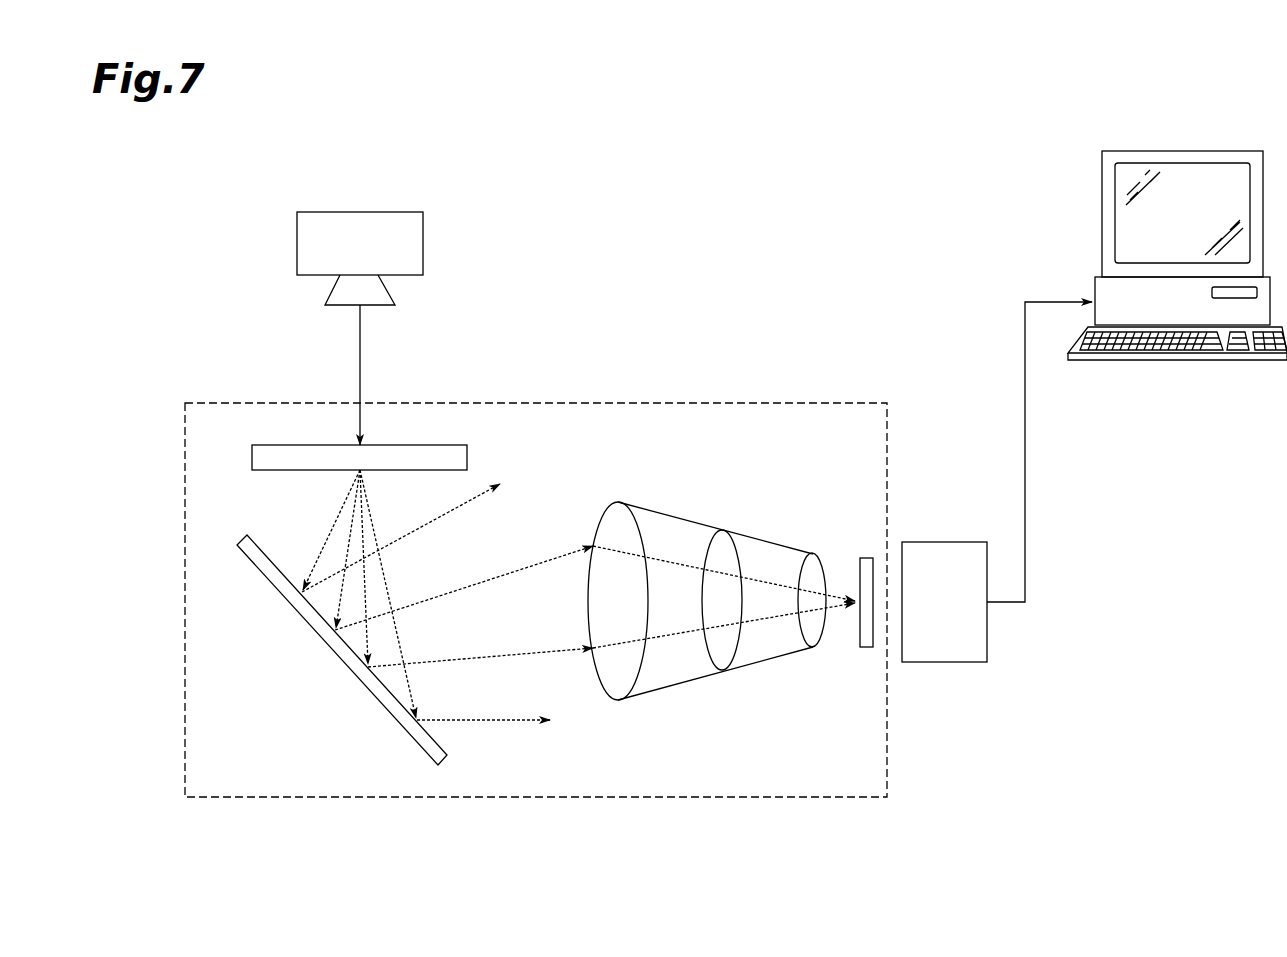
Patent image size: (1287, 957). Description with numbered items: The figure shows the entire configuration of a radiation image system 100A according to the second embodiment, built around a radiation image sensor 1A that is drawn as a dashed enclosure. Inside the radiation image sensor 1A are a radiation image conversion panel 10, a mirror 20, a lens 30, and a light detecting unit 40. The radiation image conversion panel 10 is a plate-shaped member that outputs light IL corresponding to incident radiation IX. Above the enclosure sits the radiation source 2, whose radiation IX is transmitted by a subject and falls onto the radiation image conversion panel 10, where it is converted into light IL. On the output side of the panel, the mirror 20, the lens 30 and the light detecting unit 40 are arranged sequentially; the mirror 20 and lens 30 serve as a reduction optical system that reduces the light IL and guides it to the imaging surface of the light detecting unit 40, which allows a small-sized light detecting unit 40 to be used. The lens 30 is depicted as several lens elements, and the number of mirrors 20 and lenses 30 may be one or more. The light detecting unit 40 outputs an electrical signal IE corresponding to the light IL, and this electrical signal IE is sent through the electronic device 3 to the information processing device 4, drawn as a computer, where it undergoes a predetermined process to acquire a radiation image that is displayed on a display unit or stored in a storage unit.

The radiation image system 100A is at (834, 155).
The radiation image sensor 1A is at (455, 797).
The radiation source 2 is at (396, 212).
The radiation Ix is at (360, 362).
The radiation image conversion panel 10 is at (432, 446).
The light IL is at (330, 535).
The mirror 20 is at (349, 664).
The lens 30 is at (800, 562).
The light detecting unit 40 is at (862, 556).
The electronic device 3 is at (962, 542).
The electrical signal IE is at (1025, 412).
The information processing device 4 is at (1190, 362).